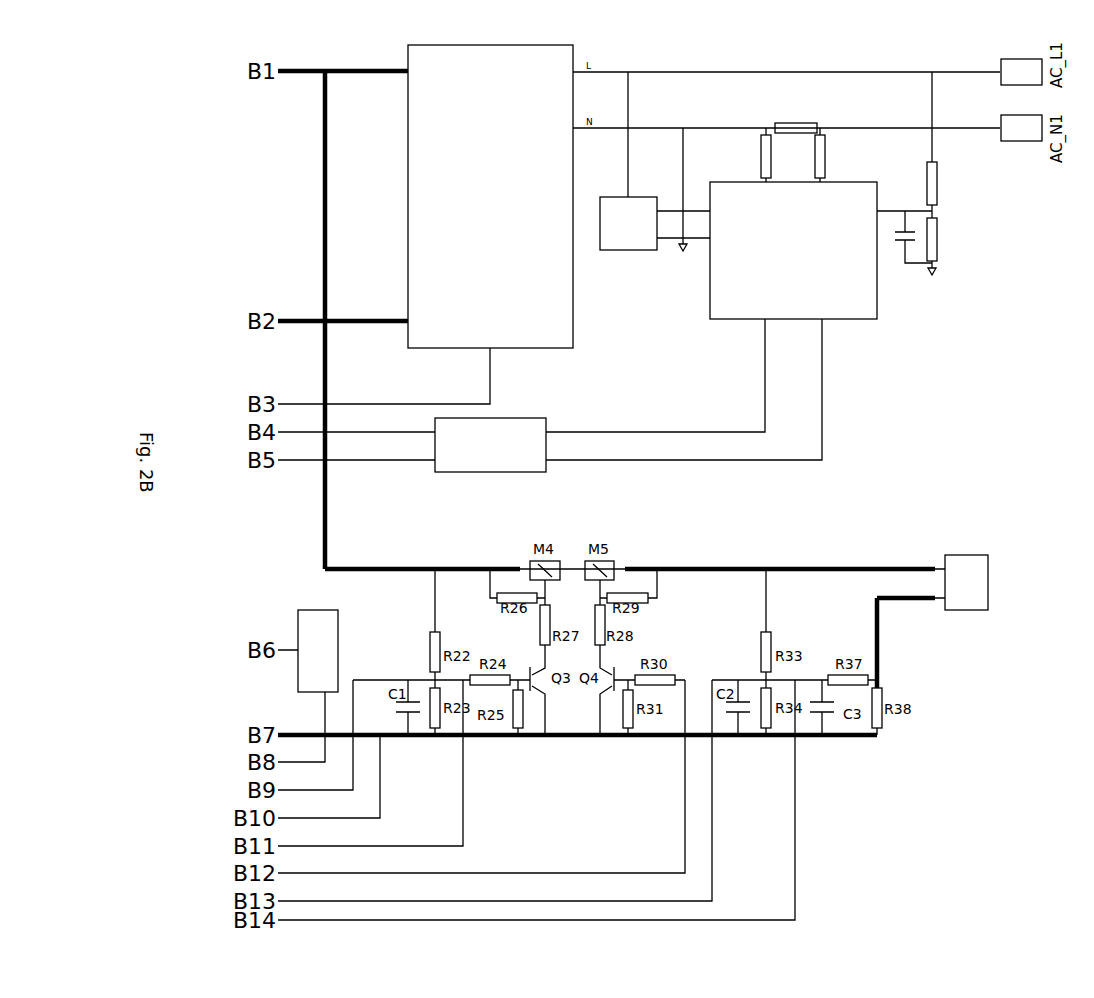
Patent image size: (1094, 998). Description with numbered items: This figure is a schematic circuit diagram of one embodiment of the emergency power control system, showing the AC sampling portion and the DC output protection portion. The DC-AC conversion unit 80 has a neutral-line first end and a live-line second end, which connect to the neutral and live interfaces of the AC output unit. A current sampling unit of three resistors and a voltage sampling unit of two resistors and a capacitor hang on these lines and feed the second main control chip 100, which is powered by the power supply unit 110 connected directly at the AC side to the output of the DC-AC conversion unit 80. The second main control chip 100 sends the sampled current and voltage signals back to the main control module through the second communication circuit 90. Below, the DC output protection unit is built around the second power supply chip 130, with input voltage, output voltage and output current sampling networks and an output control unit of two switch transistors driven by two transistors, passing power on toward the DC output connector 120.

The DC-AC conversion unit 80 is at (445, 44).
The second communication circuit 90 is at (546, 418).
The second main control chip 100 is at (877, 319).
The power supply unit 110 is at (600, 250).
The connector 120 is at (947, 556).
The second power supply chip 130 is at (338, 612).